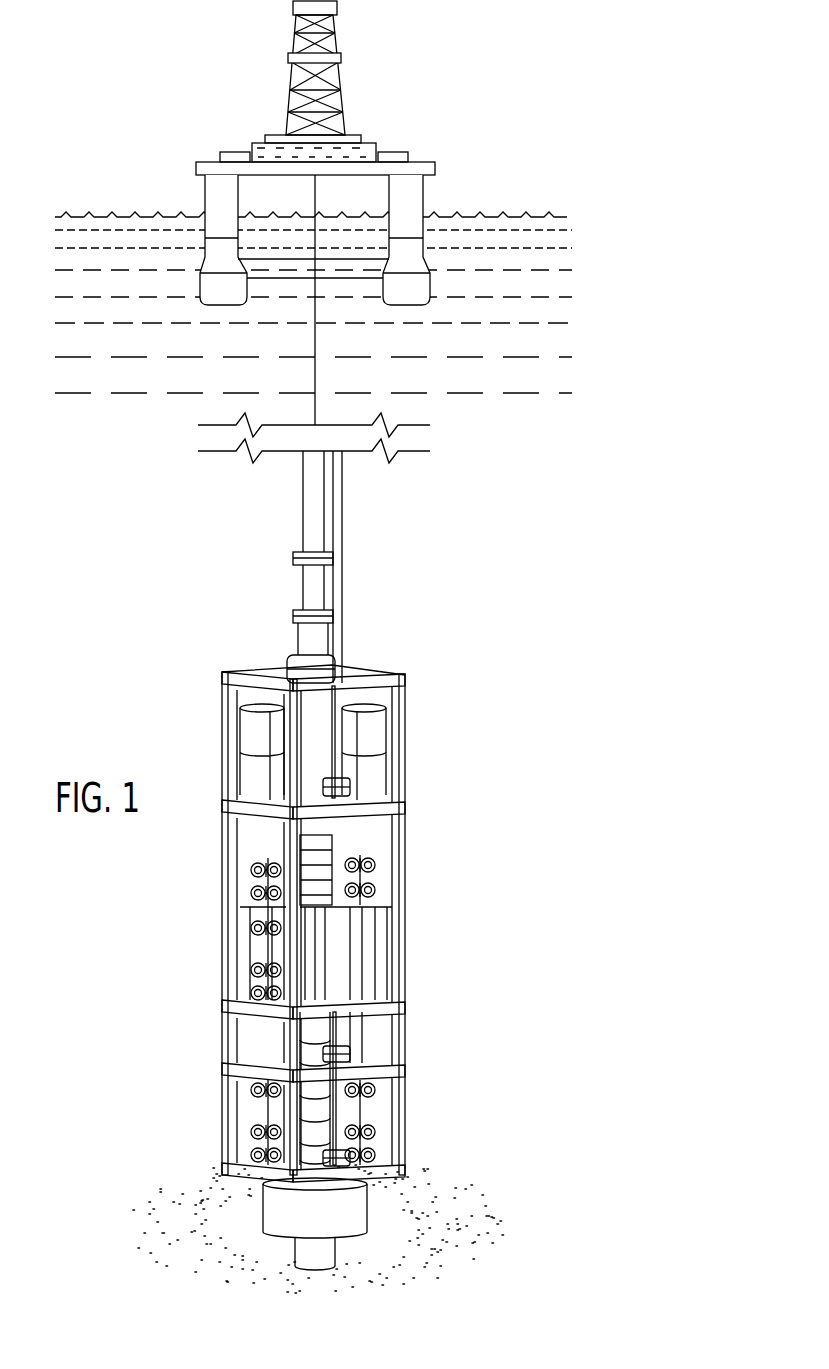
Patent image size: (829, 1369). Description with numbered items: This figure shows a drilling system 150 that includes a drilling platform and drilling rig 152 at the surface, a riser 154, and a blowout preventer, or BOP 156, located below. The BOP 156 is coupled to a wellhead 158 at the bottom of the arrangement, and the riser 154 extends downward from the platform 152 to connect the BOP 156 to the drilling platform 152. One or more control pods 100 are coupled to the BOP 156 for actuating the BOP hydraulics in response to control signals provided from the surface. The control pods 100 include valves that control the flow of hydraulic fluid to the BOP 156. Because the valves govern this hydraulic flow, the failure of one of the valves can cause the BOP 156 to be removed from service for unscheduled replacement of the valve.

The drilling system 150 is at (108, 68).
The drilling platform and drilling rig 152 is at (350, 135).
The riser 154 is at (303, 522).
The control pod 100 is at (398, 727).
The BOP 156 is at (406, 908).
The wellhead 158 is at (367, 1200).